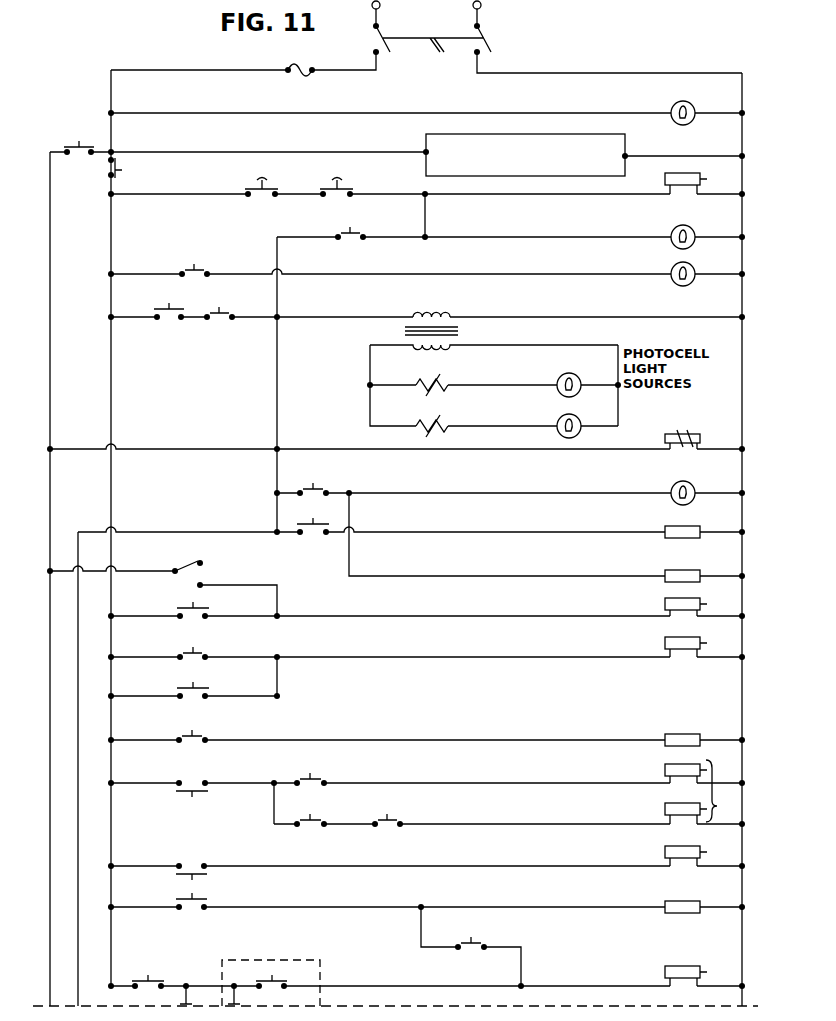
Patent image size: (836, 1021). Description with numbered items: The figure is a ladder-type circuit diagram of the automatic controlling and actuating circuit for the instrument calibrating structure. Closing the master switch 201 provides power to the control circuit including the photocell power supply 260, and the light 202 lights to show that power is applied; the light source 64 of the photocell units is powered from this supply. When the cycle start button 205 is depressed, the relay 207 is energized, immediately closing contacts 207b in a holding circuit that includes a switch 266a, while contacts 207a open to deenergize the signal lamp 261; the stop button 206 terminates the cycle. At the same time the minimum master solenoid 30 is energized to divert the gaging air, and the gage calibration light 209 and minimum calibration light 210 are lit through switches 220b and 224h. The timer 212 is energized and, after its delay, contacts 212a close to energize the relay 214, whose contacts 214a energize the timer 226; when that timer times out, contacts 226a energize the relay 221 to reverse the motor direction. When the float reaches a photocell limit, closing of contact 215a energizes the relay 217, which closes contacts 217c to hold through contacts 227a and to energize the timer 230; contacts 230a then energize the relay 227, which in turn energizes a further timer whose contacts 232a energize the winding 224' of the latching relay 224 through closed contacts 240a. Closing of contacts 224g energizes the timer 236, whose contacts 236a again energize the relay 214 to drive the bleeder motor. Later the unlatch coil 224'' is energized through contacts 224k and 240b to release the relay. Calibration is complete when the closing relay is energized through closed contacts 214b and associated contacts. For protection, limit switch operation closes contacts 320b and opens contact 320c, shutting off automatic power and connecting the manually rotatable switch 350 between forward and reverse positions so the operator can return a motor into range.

The master switch 201 is at (418, 40).
The light 202 is at (671, 106).
The photocell power supply 260 is at (432, 146).
The contacts 320b is at (88, 138).
The contact 320c is at (114, 172).
The cycle start button 205 is at (258, 178).
The stop button 206 is at (350, 188).
The relay 207 is at (665, 179).
The switch 220b is at (333, 232).
The gage calibration light 209 is at (671, 231).
The contacts 207a is at (186, 268).
The signal lamp 261 is at (671, 269).
The contacts 207b is at (174, 320).
The switch 266a is at (216, 310).
The light source 64 is at (557, 424).
The minimum master solenoid 30 is at (704, 434).
The switch 224h is at (326, 488).
The minimum calibration light 210 is at (671, 489).
The contacts 214a is at (312, 535).
The timer 226 is at (672, 528).
The timer 212 is at (672, 572).
The relay 221 is at (665, 604).
The relay 214 is at (665, 643).
The manually rotatable switch 350 is at (178, 567).
The contacts 226a is at (205, 624).
The contacts 212a is at (182, 662).
The contacts 236a is at (205, 704).
The contacts 224g is at (184, 734).
The timer 236 is at (680, 734).
The contacts 232a is at (182, 794).
The contacts 240a is at (322, 780).
The contacts 224k is at (321, 820).
The contacts 240b is at (396, 820).
The winding 224' is at (642, 772).
The unlatch coil 224'' is at (648, 813).
The relay 224 is at (722, 791).
The contacts 230a is at (204, 862).
The relay 227 is at (665, 851).
The contacts 217c is at (205, 903).
The timer 230 is at (672, 901).
The contacts 227a is at (480, 945).
The contacts 214b is at (155, 976).
The contact 215a is at (282, 976).
The relay 217 is at (672, 965).